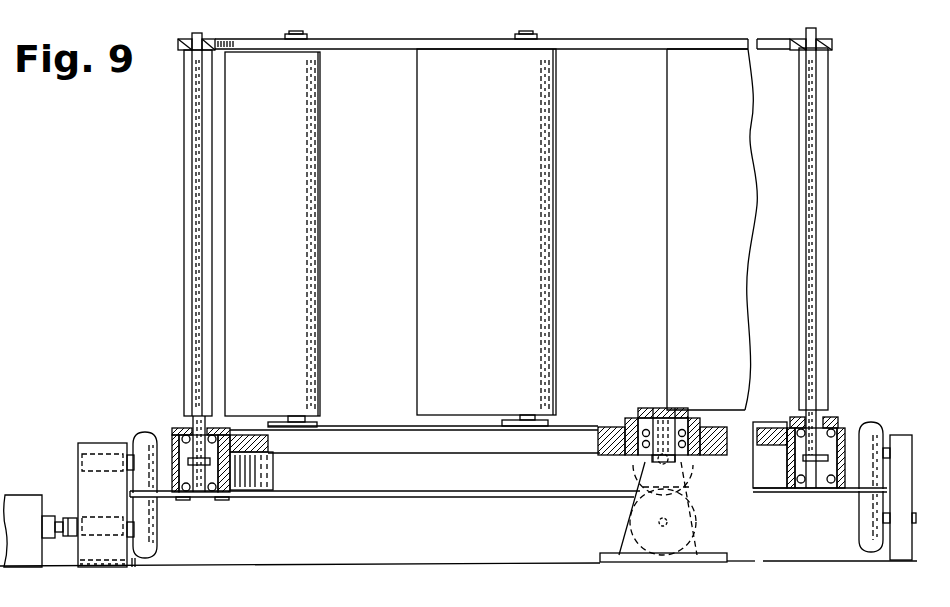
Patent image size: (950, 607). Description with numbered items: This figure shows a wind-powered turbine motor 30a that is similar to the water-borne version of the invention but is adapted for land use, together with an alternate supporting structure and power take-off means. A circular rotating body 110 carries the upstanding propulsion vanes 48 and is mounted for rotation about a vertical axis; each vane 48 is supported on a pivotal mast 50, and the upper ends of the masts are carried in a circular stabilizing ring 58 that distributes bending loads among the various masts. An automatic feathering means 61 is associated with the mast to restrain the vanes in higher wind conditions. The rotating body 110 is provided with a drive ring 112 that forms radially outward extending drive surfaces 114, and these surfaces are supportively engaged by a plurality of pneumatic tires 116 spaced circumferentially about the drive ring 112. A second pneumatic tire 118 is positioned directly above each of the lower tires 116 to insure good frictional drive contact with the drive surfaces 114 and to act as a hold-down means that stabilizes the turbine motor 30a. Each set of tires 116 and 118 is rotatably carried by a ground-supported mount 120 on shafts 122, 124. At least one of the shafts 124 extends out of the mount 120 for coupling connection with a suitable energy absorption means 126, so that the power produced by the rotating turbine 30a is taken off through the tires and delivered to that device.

The wind-powered turbine motor 30a is at (126, 268).
The circular stabilizing ring 58 is at (407, 38).
The propulsion vanes 48 is at (185, 146).
The pivotal mast 50 is at (805, 417).
The automatic feathering means 61 is at (207, 463).
The circular rotating body 110 is at (173, 430).
The drive ring 112 is at (178, 497).
The drive surfaces 114 is at (133, 567).
The pneumatic tires 116 is at (157, 550).
The second pneumatic tire 118 is at (150, 432).
The ground-supported mount 120 is at (78, 442).
The shaft 122 is at (103, 452).
The shaft 124 is at (100, 517).
The energy absorption means 126 is at (17, 495).